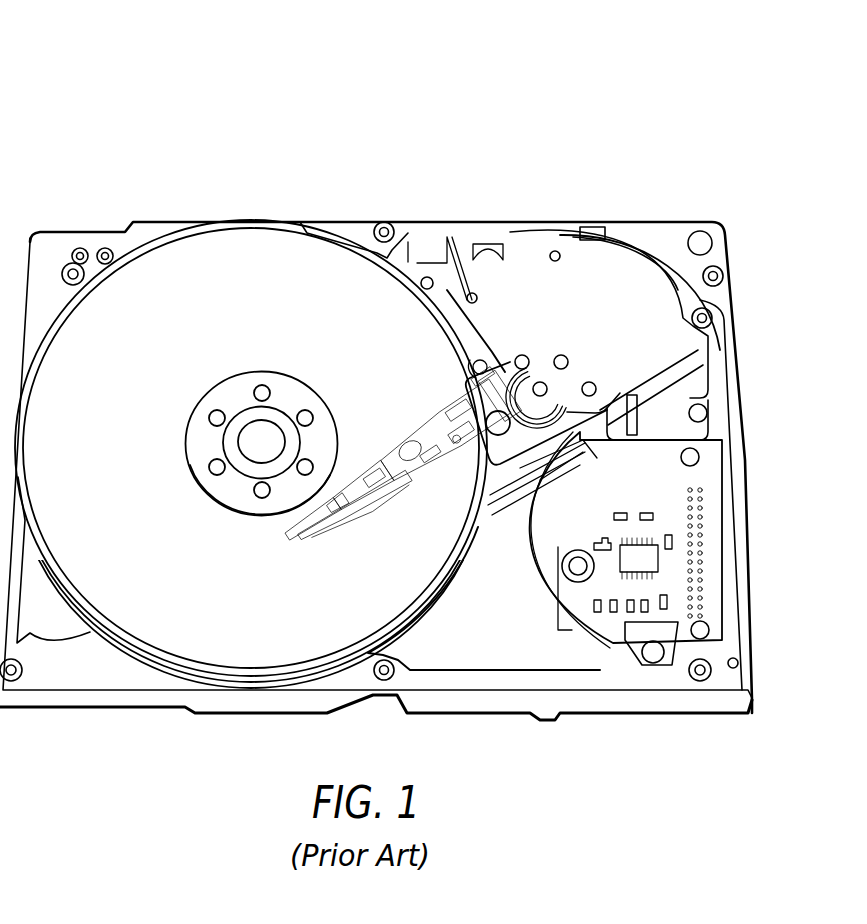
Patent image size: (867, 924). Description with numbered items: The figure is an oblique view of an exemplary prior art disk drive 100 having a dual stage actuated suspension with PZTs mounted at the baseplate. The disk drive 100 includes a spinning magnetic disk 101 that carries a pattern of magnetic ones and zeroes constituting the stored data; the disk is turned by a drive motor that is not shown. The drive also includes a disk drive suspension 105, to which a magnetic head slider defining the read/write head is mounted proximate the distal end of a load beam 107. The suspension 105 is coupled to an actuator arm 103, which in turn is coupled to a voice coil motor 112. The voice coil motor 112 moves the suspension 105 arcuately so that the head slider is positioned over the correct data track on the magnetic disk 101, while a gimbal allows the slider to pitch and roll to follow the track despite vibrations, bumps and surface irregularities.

The disk drive 100 is at (268, 172).
The magnetic disk 101 is at (210, 278).
The actuator arm 103 is at (514, 452).
The disk drive suspension 105 is at (321, 576).
The load beam 107 is at (370, 473).
The voice coil motor 112 is at (573, 317).